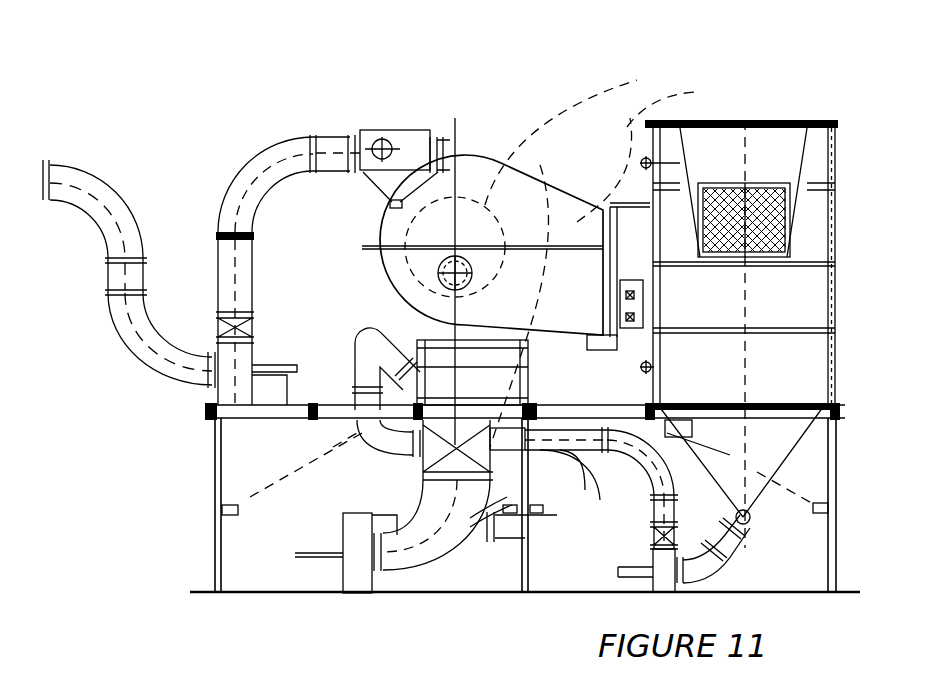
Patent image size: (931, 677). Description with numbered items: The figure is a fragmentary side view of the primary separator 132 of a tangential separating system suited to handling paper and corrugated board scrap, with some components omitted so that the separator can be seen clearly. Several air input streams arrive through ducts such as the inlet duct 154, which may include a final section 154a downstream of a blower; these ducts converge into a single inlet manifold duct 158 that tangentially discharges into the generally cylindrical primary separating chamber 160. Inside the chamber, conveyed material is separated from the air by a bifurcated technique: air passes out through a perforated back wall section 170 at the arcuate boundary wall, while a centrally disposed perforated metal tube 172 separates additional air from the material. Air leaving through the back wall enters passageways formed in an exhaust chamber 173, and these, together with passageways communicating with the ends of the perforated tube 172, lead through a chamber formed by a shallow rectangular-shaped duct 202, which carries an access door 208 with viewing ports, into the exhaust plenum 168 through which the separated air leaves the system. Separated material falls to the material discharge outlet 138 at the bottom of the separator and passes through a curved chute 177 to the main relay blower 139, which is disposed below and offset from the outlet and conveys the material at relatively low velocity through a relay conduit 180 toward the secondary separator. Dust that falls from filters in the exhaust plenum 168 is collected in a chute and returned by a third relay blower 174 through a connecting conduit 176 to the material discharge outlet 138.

The primary separator 132 is at (240, 95).
The material discharge outlet 138 is at (437, 396).
The main relay blower 139 is at (353, 575).
The inlet duct 154 is at (138, 310).
The final section of duct 154a is at (270, 173).
The inlet manifold duct 158 is at (412, 143).
The primary separating chamber 160 is at (540, 216).
The exhaust plenum 168 is at (818, 147).
The perforated back wall section 170 is at (628, 170).
The perforated metal tube 172 is at (586, 256).
The exhaust chamber 173 is at (684, 104).
The third relay blower 174 is at (617, 578).
The connecting conduit 176 is at (383, 330).
The curved chute 177 is at (420, 552).
The relay conduit 180 is at (397, 517).
The shallow rectangular-shaped duct 202 is at (641, 367).
The access door 208 is at (640, 323).